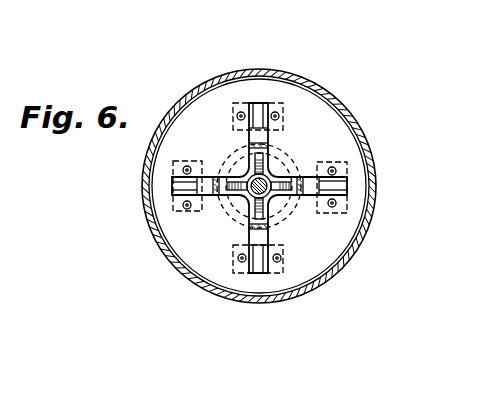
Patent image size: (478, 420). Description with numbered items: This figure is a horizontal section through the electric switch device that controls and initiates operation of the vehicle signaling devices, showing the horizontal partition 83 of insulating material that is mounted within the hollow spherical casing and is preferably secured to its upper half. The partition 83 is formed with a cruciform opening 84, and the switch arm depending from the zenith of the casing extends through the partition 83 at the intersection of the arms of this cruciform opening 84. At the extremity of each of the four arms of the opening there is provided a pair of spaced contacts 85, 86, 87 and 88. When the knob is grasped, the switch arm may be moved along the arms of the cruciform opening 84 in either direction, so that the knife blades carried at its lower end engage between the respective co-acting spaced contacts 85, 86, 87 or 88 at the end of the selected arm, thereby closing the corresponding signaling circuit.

The horizontal partition 83 is at (338, 150).
The cruciform opening 84 is at (268, 147).
The spaced contacts 85 is at (173, 186).
The spaced contacts 86 is at (256, 108).
The spaced contacts 87 is at (347, 181).
The spaced contacts 88 is at (263, 271).